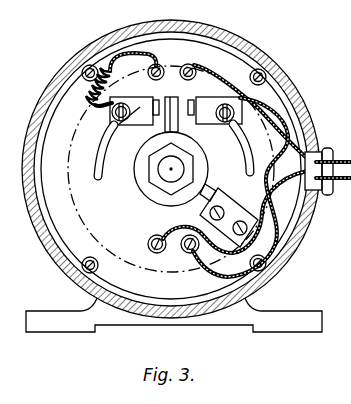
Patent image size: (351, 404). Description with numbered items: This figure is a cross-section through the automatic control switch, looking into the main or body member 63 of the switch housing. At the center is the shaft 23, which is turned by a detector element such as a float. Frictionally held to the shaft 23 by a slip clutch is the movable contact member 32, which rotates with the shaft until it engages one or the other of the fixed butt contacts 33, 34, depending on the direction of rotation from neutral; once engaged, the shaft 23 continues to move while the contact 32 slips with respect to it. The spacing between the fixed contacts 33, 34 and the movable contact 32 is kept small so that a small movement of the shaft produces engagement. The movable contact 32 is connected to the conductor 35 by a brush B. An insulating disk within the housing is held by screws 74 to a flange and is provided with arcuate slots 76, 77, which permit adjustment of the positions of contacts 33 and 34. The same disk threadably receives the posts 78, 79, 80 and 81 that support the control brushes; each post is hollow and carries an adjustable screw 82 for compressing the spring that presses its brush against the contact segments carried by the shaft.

The shaft 23 is at (170, 168).
The movable contact member 32 is at (172, 100).
The fixed butt contact 33 is at (150, 118).
The fixed butt contact 34 is at (205, 124).
The conductor 35 is at (288, 205).
The main or body member 63 is at (25, 143).
The screws 74 is at (98, 62).
The arcuate slot 76 is at (93, 146).
The arcuate slot 77 is at (243, 140).
The post 78 is at (156, 253).
The post 79 is at (190, 253).
The post 80 is at (158, 63).
The post 81 is at (189, 63).
The adjustable screw 82 is at (190, 234).
The brush B is at (212, 191).